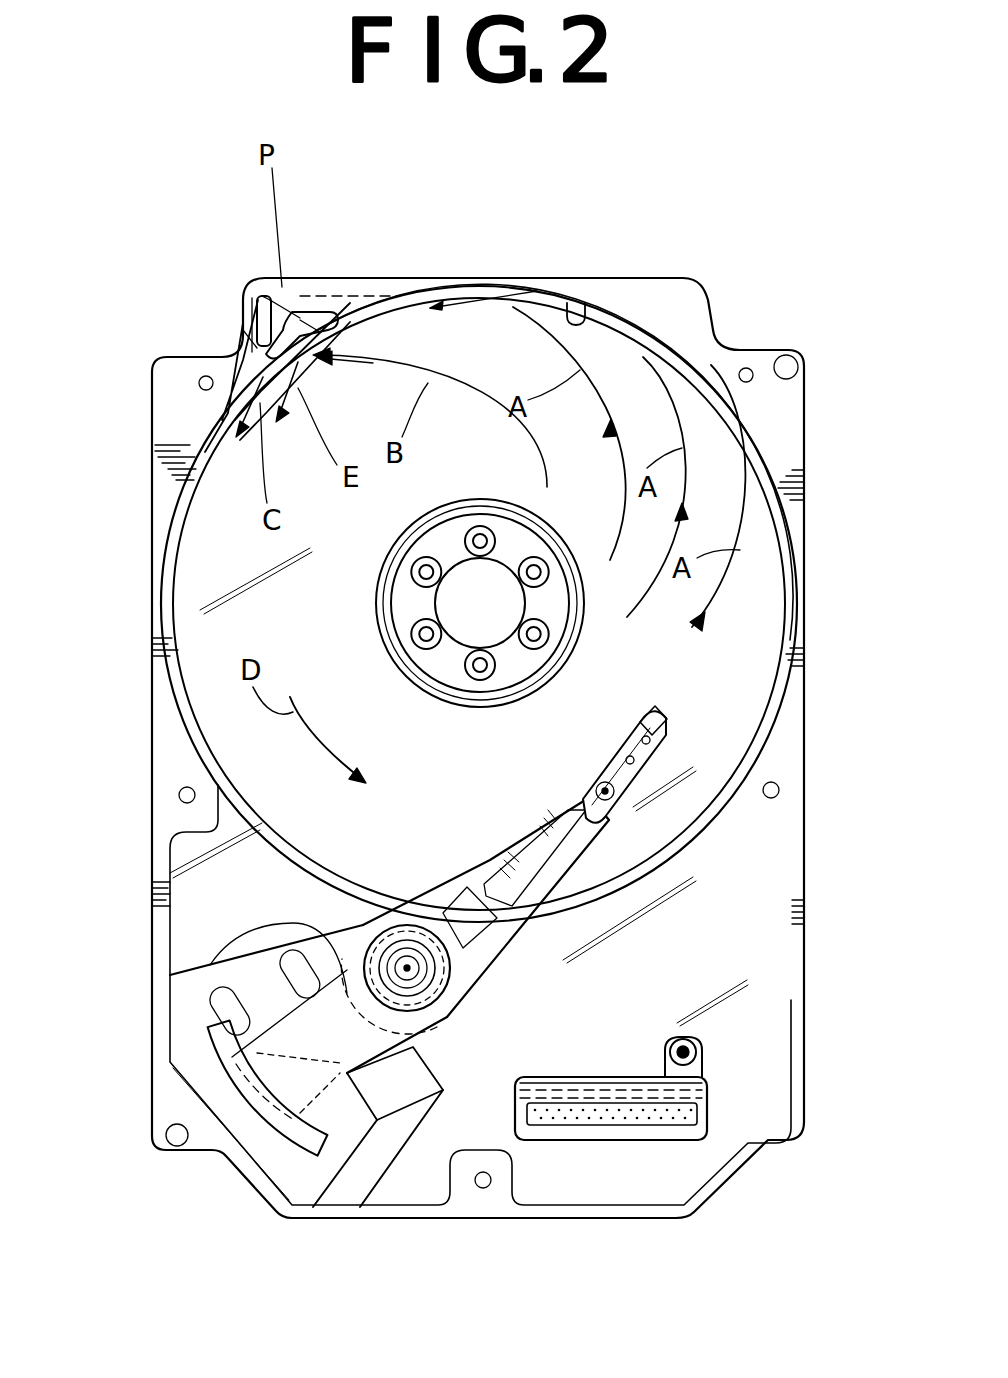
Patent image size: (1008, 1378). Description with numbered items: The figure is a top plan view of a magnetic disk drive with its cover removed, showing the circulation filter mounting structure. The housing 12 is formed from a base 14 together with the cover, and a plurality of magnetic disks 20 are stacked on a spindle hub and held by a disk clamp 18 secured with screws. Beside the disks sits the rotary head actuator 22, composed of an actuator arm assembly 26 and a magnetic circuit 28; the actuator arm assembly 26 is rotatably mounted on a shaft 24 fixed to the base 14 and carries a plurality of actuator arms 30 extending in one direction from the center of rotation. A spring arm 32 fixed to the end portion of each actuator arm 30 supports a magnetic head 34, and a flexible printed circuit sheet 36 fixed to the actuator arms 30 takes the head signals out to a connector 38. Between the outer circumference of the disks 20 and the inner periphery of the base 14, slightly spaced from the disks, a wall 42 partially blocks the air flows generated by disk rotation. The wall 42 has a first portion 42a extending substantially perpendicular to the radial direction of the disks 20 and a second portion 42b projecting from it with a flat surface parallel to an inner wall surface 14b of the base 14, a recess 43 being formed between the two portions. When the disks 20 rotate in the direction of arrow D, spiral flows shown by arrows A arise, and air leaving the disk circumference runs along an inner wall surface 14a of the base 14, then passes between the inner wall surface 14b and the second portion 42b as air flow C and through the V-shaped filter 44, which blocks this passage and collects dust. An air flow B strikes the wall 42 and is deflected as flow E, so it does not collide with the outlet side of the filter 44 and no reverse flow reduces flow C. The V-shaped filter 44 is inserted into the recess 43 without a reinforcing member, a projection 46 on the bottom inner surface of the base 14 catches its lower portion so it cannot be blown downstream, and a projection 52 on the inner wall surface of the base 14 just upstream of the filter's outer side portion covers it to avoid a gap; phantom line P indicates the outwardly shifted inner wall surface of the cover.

The housing 12 is at (712, 280).
The base 14 is at (785, 413).
The inner wall surface of the base 14a is at (584, 310).
The inner wall surface of the base 14b is at (387, 287).
The disk clamp 18 is at (375, 602).
The magnetic disks 20 is at (775, 608).
The rotary head actuator 22 is at (352, 928).
The shaft 24 is at (400, 955).
The actuator arm assembly 26 is at (450, 865).
The magnetic circuit 28 is at (188, 1020).
The actuator arms 30 is at (518, 835).
The spring arm 32 is at (615, 768).
The magnetic head 34 is at (662, 720).
The flexible printed circuit sheet 36 is at (490, 1040).
The connector 38 is at (635, 1140).
The wall 42 is at (315, 322).
The first portion of the wall 42a is at (335, 345).
The second portion of the wall 42b is at (303, 315).
The recess 43 is at (302, 303).
The V-shaped filter 44 is at (252, 305).
The projection 46 is at (257, 348).
The projection 52 is at (265, 297).